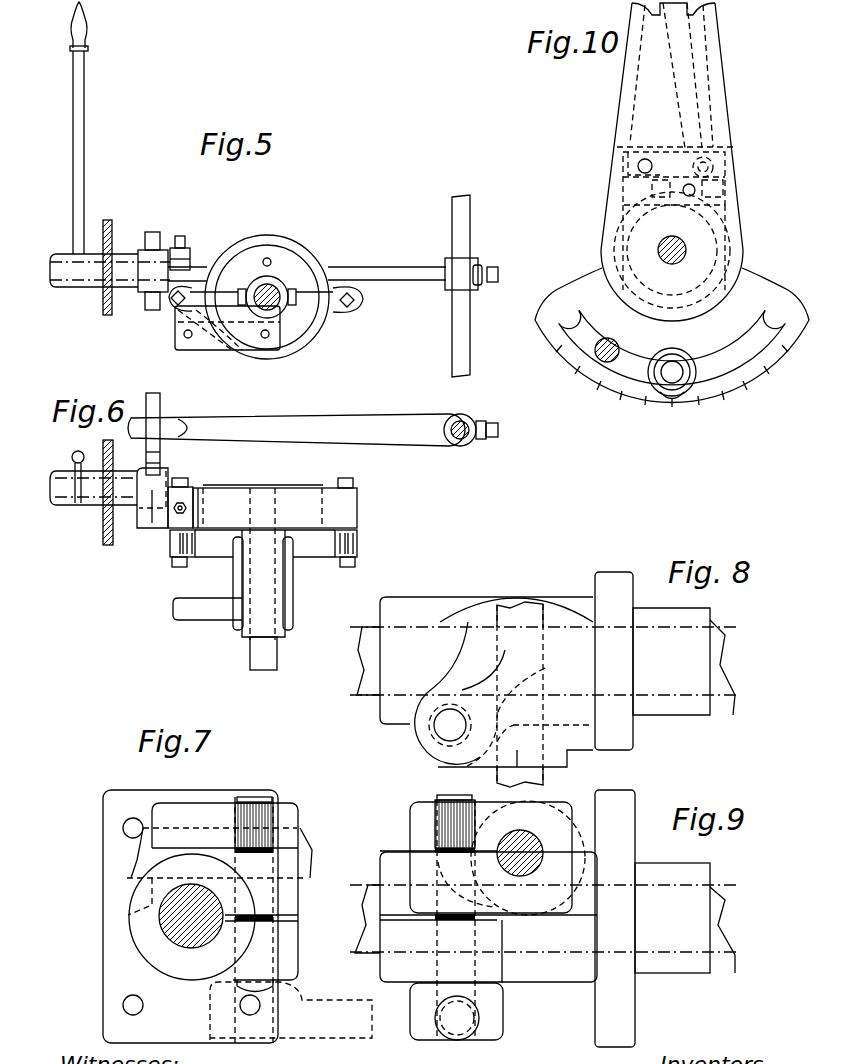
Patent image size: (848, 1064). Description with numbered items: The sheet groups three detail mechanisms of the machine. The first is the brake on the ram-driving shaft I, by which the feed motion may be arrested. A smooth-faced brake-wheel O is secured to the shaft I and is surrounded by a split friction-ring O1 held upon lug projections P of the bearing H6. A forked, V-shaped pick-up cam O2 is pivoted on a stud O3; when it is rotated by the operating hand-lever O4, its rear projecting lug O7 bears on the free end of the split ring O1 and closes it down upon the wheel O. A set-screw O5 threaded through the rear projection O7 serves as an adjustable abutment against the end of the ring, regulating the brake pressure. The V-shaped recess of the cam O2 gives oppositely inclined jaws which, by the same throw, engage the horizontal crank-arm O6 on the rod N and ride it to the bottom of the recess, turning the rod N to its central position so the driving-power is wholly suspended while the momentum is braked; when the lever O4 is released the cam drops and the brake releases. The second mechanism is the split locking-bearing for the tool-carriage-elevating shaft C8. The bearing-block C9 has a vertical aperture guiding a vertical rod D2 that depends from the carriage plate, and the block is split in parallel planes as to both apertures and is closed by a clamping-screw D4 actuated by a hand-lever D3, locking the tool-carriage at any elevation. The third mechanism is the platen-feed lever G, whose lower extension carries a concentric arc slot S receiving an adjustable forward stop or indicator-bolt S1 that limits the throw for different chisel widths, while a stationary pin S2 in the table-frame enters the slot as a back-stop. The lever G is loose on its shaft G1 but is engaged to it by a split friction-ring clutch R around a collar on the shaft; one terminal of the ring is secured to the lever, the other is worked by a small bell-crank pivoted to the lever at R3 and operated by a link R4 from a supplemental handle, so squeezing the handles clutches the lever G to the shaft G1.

In FIG. 5, the brake-wheel O is at (265, 264).
In FIG. 6, the brake-wheel O is at (267, 478).
In FIG. 5, the split friction-ring O1 is at (282, 240).
In FIG. 6, the split friction-ring O1 is at (302, 511).
In FIG. 5, the forked cam O2 is at (156, 242).
In FIG. 6, the forked cam O2 is at (155, 415).
In FIG. 5, the stud O3 is at (52, 286).
In FIG. 6, the stud O3 is at (97, 492).
In FIG. 5, the operating hand-lever O4 is at (84, 137).
In FIG. 6, the operating hand-lever O4 is at (72, 456).
In FIG. 5, the set-screw O5 is at (190, 243).
In FIG. 6, the set-screw O5 is at (181, 502).
In FIG. 5, the crank-arm O6 is at (423, 272).
In FIG. 6, the crank-arm O6 is at (296, 430).
In FIG. 6, the rear projecting lug O7 is at (152, 523).
In FIG. 5, the lug projections P is at (172, 305).
In FIG. 6, the lug projections P is at (175, 547).
In FIG. 5, the bearing H6 is at (203, 338).
In FIG. 6, the bearing H6 is at (254, 630).
In FIG. 5, the shaft I is at (258, 306).
In FIG. 6, the shaft I is at (263, 653).
In FIG. 5, the rod N is at (471, 286).
In FIG. 6, the rod N is at (462, 446).
In FIG. 10, the hand-lever G is at (738, 184).
In FIG. 10, the shaft G1 is at (675, 265).
In FIG. 10, the split friction-ring clutch R is at (693, 165).
In FIG. 10, the pivot of bell-crank R3 is at (648, 160).
In FIG. 10, the link R4 is at (696, 84).
In FIG. 10, the arc slot S is at (670, 358).
In FIG. 10, the indicator-bolt S1 is at (672, 373).
In FIG. 10, the stationary pin S2 is at (617, 344).
In FIG. 8, the shaft C8 is at (546, 661).
In FIG. 9, the shaft C8 is at (383, 930).
In FIG. 7, the shaft C8 is at (162, 930).
In FIG. 8, the bearing-block C9 is at (545, 678).
In FIG. 9, the bearing-block C9 is at (545, 918).
In FIG. 7, the bearing-block C9 is at (199, 994).
In FIG. 8, the vertical rod D2 is at (520, 777).
In FIG. 9, the vertical rod D2 is at (543, 850).
In FIG. 7, the vertical rod D2 is at (290, 848).
In FIG. 9, the hand-lever D3 is at (457, 1018).
In FIG. 7, the hand-lever D3 is at (291, 1010).
In FIG. 8, the clamping-screw D4 is at (450, 725).
In FIG. 9, the clamping-screw D4 is at (438, 800).
In FIG. 7, the clamping-screw D4 is at (271, 800).